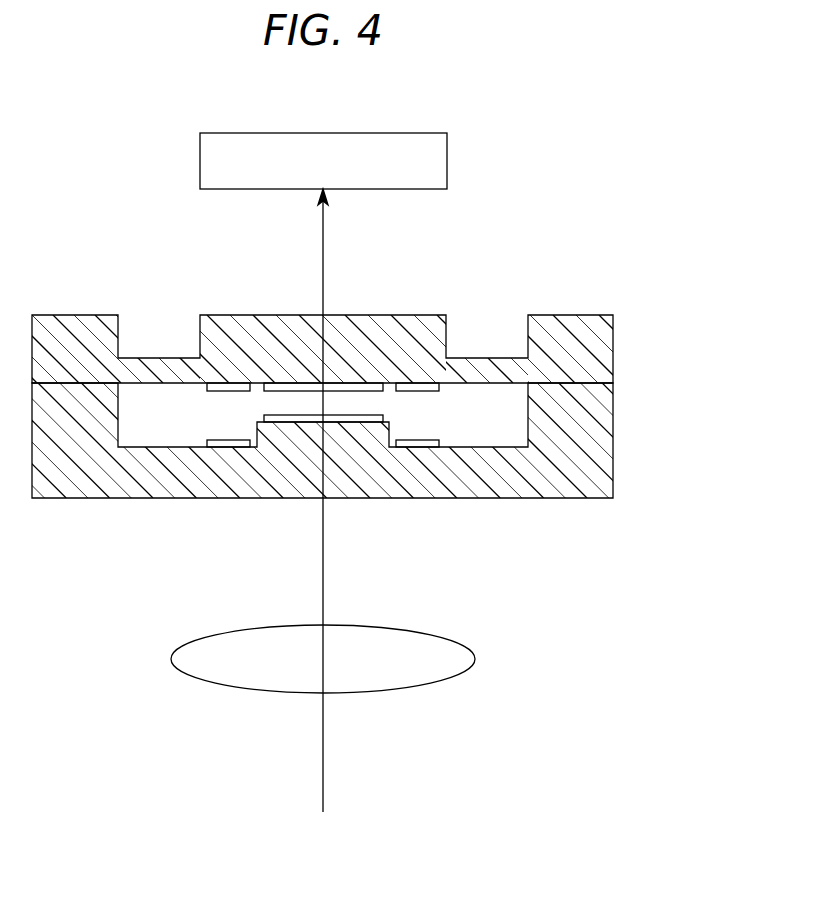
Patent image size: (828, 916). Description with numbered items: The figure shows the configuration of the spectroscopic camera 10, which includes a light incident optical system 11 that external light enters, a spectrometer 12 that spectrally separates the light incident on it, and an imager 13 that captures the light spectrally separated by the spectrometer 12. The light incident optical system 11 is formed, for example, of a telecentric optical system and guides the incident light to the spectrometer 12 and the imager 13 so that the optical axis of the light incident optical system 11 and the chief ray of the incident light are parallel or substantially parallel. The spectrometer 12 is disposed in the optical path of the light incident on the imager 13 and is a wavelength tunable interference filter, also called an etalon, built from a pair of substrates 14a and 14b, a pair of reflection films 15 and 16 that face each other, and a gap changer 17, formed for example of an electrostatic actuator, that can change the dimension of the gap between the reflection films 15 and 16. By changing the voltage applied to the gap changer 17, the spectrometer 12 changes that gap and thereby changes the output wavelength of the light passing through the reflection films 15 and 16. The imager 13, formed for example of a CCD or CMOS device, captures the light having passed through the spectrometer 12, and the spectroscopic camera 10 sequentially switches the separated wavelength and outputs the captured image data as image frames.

The spectroscopic camera 10 is at (600, 182).
The light incident optical system 11 is at (475, 657).
The spectrometer 12 is at (632, 342).
The imager 13 is at (447, 159).
The substrate 14a is at (613, 358).
The substrate 14b is at (613, 452).
The reflection film 15 is at (285, 420).
The reflection film 16 is at (360, 383).
The gap changer 17 is at (228, 392).